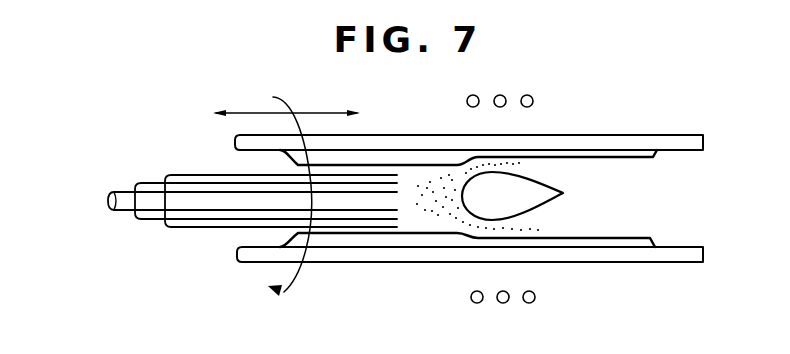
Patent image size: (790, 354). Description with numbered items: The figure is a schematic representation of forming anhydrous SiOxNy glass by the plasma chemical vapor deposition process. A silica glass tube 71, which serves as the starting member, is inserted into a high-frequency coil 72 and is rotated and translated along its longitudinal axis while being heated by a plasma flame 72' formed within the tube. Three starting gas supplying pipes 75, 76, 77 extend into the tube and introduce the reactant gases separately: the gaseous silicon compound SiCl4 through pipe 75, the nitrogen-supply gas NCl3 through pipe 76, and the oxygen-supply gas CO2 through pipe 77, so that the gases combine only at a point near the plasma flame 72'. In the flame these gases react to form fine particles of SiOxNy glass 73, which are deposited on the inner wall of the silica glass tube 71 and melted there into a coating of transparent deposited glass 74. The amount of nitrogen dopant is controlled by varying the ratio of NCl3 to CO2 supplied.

The silica glass tube 71 is at (671, 136).
The high-frequency coil 72 is at (467, 288).
The plasma flame 72' is at (493, 163).
The fine particles of SiOxNy glass 73 is at (573, 249).
The deposited glass 74 is at (405, 160).
The starting gas supplying pipe 75 is at (125, 211).
The starting gas supplying pipe 76 is at (152, 221).
The starting gas supplying pipe 77 is at (193, 228).